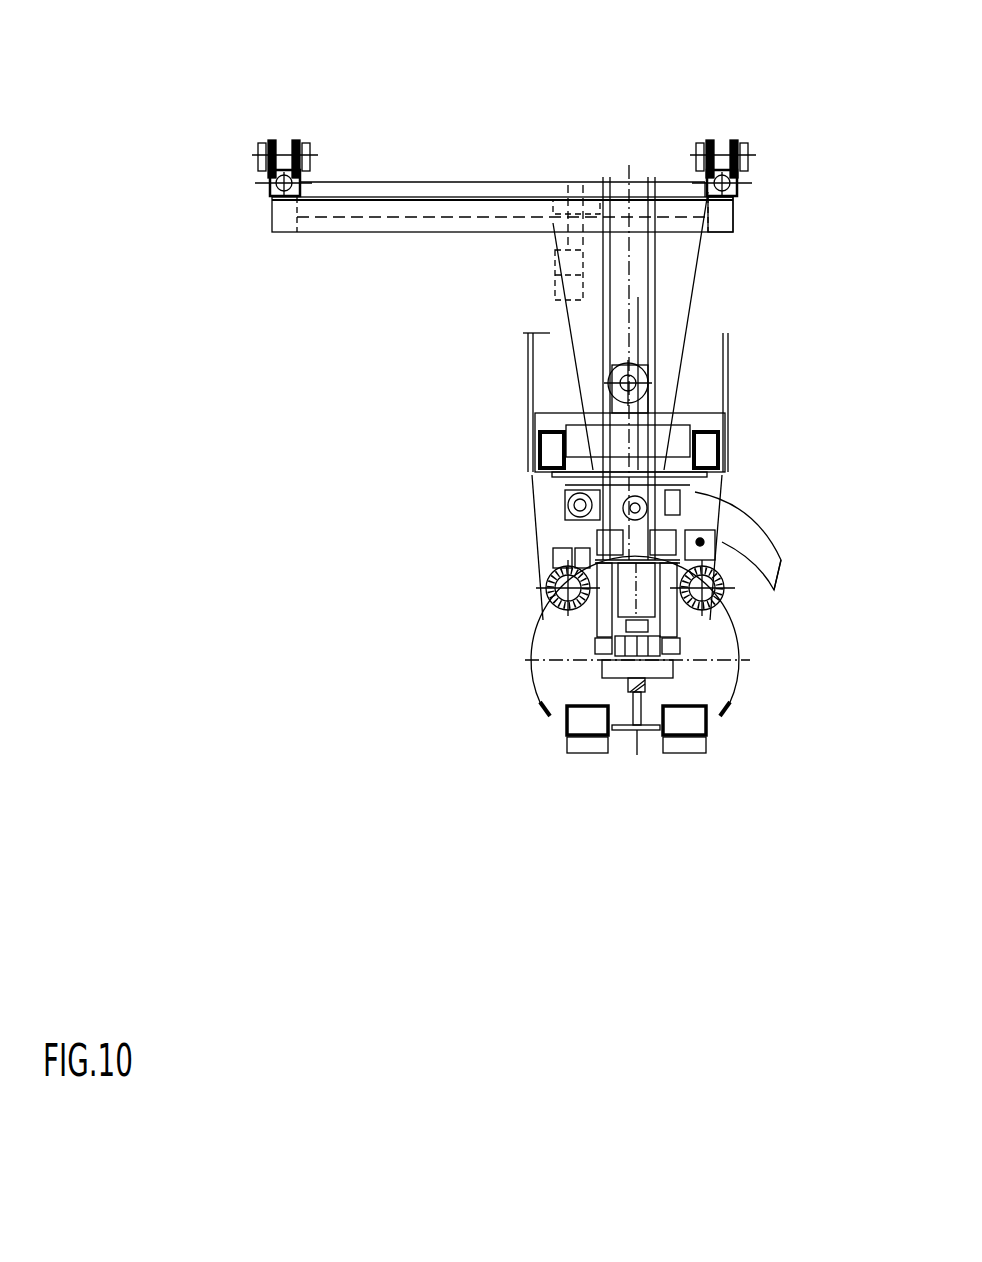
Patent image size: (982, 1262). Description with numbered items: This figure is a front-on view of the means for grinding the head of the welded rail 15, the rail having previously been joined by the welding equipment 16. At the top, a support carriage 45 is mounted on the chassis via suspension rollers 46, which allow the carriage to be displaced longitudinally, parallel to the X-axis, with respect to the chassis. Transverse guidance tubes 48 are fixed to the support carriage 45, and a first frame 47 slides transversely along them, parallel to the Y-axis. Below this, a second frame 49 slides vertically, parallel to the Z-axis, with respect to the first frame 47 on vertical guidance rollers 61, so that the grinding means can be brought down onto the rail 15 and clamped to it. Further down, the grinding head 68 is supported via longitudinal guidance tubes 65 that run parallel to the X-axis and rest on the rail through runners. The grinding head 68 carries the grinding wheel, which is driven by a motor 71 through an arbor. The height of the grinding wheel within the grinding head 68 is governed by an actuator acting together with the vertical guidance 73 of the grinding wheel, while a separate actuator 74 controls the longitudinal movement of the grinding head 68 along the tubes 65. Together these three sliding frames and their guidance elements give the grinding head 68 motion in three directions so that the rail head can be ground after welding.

The welded rail 15 is at (620, 682).
The welding equipment 16 is at (652, 682).
The support carriage 45 is at (720, 220).
The suspension rollers 46 is at (280, 148).
The first frame 47 is at (670, 275).
The transverse guidance tubes 48 is at (368, 205).
The second frame 49 is at (700, 424).
The vertical guidance rollers 61 is at (633, 380).
The longitudinal guidance tubes 65 is at (548, 603).
The grinding head 68 is at (603, 617).
The motor 71 is at (642, 600).
The vertical guidance 73 is at (600, 630).
The actuator 74 is at (712, 533).